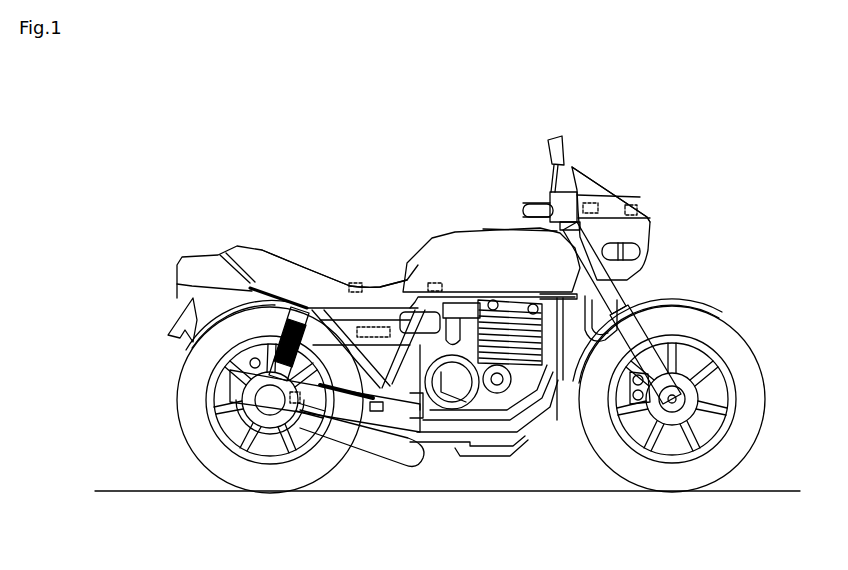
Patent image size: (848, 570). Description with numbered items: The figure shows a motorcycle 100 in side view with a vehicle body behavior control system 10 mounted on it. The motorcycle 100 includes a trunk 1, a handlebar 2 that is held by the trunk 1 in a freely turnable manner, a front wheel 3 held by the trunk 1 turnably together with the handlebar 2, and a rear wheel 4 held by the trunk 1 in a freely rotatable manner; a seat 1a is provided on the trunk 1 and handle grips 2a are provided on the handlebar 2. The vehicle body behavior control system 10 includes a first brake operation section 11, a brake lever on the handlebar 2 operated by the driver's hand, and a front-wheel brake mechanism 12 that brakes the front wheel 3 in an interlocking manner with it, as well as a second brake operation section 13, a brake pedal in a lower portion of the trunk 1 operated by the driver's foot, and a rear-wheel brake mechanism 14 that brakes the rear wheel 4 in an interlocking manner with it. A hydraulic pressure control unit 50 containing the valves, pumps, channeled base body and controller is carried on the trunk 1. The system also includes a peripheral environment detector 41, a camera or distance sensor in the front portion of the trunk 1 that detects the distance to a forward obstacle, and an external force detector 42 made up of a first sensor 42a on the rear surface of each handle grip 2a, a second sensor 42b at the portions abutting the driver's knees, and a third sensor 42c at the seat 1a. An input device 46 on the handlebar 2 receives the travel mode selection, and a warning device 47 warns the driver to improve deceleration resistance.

The motorcycle 100 is at (763, 91).
The trunk 1 is at (220, 222).
The seat 1a is at (298, 265).
The handlebar 2 is at (507, 147).
The handle grip 2a is at (540, 203).
The front wheel 3 is at (748, 425).
The rear wheel 4 is at (186, 432).
The vehicle body behavior control system 10 is at (679, 217).
The first brake operation section 11 is at (610, 232).
The front-wheel brake mechanism 12 is at (615, 465).
The second brake operation section 13 is at (428, 445).
The rear-wheel brake mechanism 14 is at (200, 337).
The peripheral environment detector 41 is at (643, 207).
The external force detector 42 is at (451, 133).
The first sensor 42a is at (523, 212).
The second sensor 42b is at (434, 283).
The third sensor 42c is at (352, 283).
The input device 46 is at (553, 188).
The warning device 47 is at (597, 205).
The hydraulic pressure control unit 50 is at (368, 337).